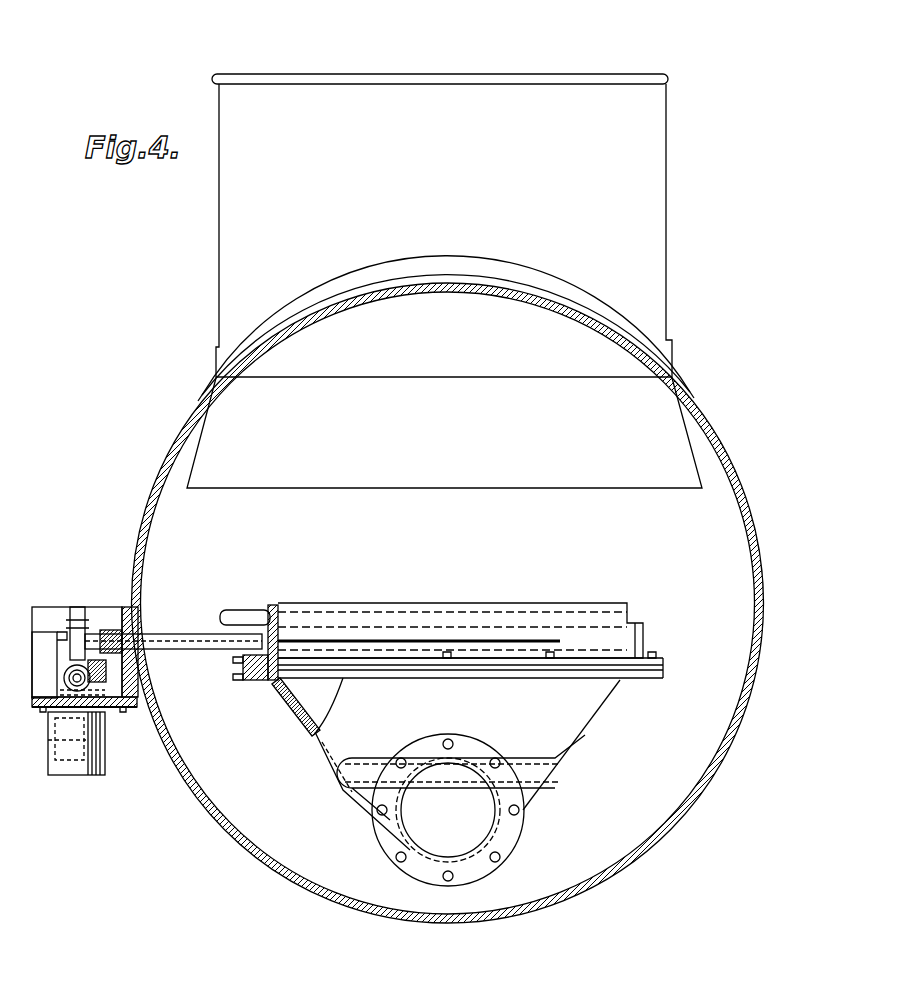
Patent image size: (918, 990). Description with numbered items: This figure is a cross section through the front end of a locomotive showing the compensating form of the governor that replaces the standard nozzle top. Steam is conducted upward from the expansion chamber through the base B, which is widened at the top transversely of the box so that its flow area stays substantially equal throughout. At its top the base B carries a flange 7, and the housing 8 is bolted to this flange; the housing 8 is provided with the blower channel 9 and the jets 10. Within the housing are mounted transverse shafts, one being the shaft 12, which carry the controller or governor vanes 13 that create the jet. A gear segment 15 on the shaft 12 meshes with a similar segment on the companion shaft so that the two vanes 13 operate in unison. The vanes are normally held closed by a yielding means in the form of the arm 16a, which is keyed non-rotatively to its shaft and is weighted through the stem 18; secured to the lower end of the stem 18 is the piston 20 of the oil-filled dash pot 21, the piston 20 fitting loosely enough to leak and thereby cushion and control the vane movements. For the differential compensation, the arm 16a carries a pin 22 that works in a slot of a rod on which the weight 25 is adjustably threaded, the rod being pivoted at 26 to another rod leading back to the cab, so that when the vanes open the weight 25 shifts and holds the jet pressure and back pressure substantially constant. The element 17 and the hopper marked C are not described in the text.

The hopper C is at (444, 281).
The base B is at (467, 769).
The flange 7 is at (264, 683).
The housing 8 is at (279, 635).
The blower channel 9 is at (300, 613).
The jets 10 is at (245, 602).
The shaft 12 is at (185, 640).
The controller or governor vanes 13 is at (320, 620).
The gear segment 15 is at (94, 660).
The arm 16a is at (85, 646).
The vertical shaft 17 is at (85, 632).
The stem 18 is at (49, 665).
The piston 20 is at (50, 755).
The dash pot 21 is at (62, 738).
The pin 22 is at (97, 680).
The weight 25 is at (64, 677).
The pivot 26 is at (117, 708).